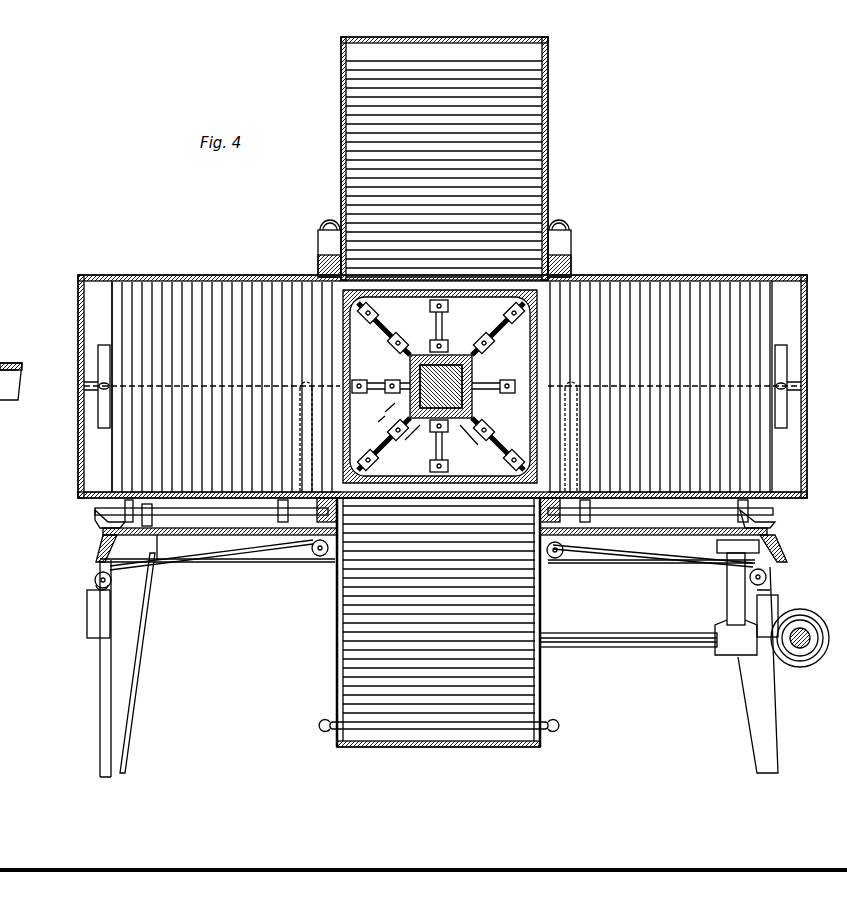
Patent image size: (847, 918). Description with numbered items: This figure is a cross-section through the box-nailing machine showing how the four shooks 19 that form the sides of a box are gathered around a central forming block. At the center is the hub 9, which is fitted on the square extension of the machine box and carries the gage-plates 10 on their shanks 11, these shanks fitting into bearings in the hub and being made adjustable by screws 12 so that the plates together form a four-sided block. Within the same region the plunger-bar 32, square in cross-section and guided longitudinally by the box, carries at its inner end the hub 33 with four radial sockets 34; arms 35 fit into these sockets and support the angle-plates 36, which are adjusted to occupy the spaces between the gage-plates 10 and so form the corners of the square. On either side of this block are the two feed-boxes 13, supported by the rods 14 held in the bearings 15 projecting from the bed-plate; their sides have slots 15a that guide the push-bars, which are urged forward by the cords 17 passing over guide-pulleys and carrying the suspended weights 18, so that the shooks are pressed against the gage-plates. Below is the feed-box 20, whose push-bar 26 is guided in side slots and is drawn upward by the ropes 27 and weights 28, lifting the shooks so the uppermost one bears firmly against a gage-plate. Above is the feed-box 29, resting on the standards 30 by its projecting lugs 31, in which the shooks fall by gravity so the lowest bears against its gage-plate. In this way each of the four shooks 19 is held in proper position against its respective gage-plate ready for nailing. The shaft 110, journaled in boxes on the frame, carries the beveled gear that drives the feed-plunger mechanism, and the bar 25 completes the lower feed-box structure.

The hub 9 is at (455, 345).
The gage-plates 10 is at (448, 306).
The shanks 11 is at (436, 326).
The screws 12 is at (430, 313).
The feed-boxes 13 is at (548, 40).
The rods 14 is at (262, 513).
The bearings 15 is at (115, 520).
The slots 15a is at (80, 394).
The cords 17 is at (215, 520).
The weights 18 is at (90, 590).
The shooks 19 is at (527, 143).
The feed-box 20 is at (345, 680).
The cross bar 25 is at (337, 745).
The push-bar 26 is at (460, 728).
The ropes 27 is at (337, 666).
The weights 28 is at (90, 630).
The feed-box 29 is at (461, 158).
The standards 30 is at (318, 244).
The lugs 31 is at (330, 222).
The plunger-bar 32 is at (462, 370).
The hub 33 is at (415, 439).
The radial sockets 34 is at (426, 427).
The arms 35 is at (370, 420).
The angle-plates 36 is at (357, 340).
The shaft 110 is at (800, 650).